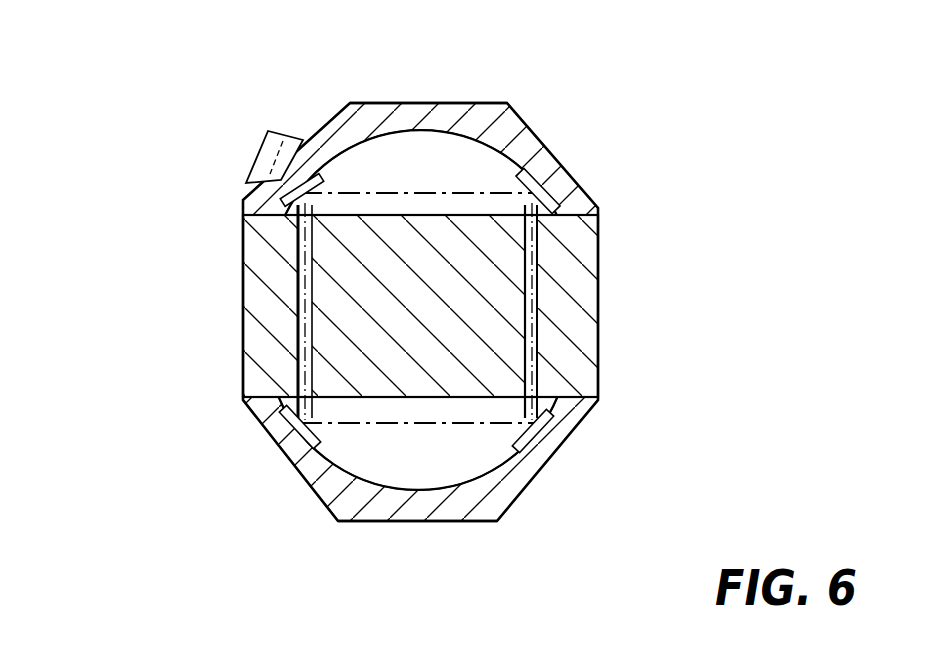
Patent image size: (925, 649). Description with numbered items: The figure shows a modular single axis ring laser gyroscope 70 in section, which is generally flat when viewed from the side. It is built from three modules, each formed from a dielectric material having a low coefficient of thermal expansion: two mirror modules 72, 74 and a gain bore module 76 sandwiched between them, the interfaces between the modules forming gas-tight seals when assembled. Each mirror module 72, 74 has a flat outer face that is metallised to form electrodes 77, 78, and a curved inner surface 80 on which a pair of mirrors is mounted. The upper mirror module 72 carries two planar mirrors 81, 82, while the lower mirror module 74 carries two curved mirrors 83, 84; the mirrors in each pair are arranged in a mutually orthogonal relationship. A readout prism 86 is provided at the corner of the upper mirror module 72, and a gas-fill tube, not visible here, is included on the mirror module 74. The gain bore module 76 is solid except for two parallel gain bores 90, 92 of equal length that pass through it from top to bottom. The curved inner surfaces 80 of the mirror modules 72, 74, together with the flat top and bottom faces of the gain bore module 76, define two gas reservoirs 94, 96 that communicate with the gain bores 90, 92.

The single axis ring laser gyroscope 70 is at (124, 97).
The mirror module 72 is at (552, 140).
The mirror module 74 is at (300, 467).
The gain bore module 76 is at (265, 308).
The electrode 77 is at (361, 102).
The electrode 78 is at (448, 523).
The inner surface 80 is at (465, 140).
The mirror 81 is at (282, 196).
The mirror 82 is at (590, 190).
The mirror 83 is at (258, 430).
The mirror 84 is at (542, 430).
The readout prism 86 is at (276, 132).
The gain bore 90 is at (298, 268).
The gain bore 92 is at (540, 294).
The gas reservoir 94 is at (417, 184).
The gas reservoir 96 is at (436, 473).